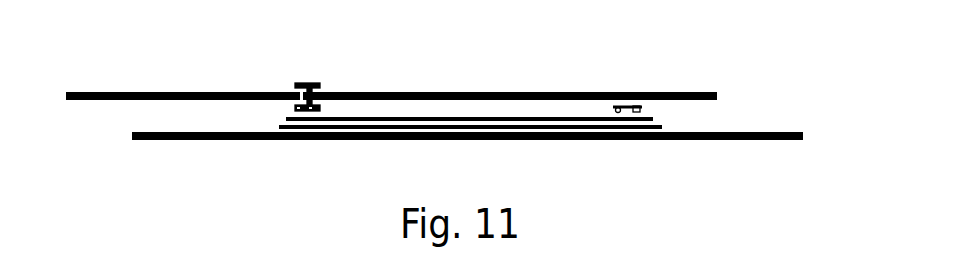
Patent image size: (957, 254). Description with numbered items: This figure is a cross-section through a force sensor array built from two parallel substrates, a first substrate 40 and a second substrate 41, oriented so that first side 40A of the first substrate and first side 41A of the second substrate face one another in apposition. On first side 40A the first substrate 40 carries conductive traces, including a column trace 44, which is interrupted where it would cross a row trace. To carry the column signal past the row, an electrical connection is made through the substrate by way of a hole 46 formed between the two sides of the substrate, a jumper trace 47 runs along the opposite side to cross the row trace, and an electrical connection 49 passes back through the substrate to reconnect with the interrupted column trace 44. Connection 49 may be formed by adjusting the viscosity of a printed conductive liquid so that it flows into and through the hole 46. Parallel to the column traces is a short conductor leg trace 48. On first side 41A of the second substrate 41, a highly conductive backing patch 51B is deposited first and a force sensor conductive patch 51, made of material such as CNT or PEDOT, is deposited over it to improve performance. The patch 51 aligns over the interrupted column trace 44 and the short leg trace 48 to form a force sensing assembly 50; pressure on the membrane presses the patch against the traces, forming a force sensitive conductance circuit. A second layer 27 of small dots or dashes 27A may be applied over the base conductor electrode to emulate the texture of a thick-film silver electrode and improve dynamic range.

The first substrate 40 is at (391, 65).
The first side of first substrate 40A is at (100, 118).
The second substrate 41 is at (467, 165).
The first side of second substrate 41A is at (772, 110).
The column trace 44 is at (347, 82).
The hole 46 is at (293, 98).
The jumper trace 47 is at (296, 50).
The electrical connection 49 is at (337, 64).
The conductive patch 51 is at (446, 147).
The highly conductive backing patch 51B is at (468, 155).
The force sensing assembly 50 is at (359, 174).
The second layer 27 is at (658, 111).
The small dots or dashes 27A is at (594, 78).
The leg trace 48 is at (654, 69).